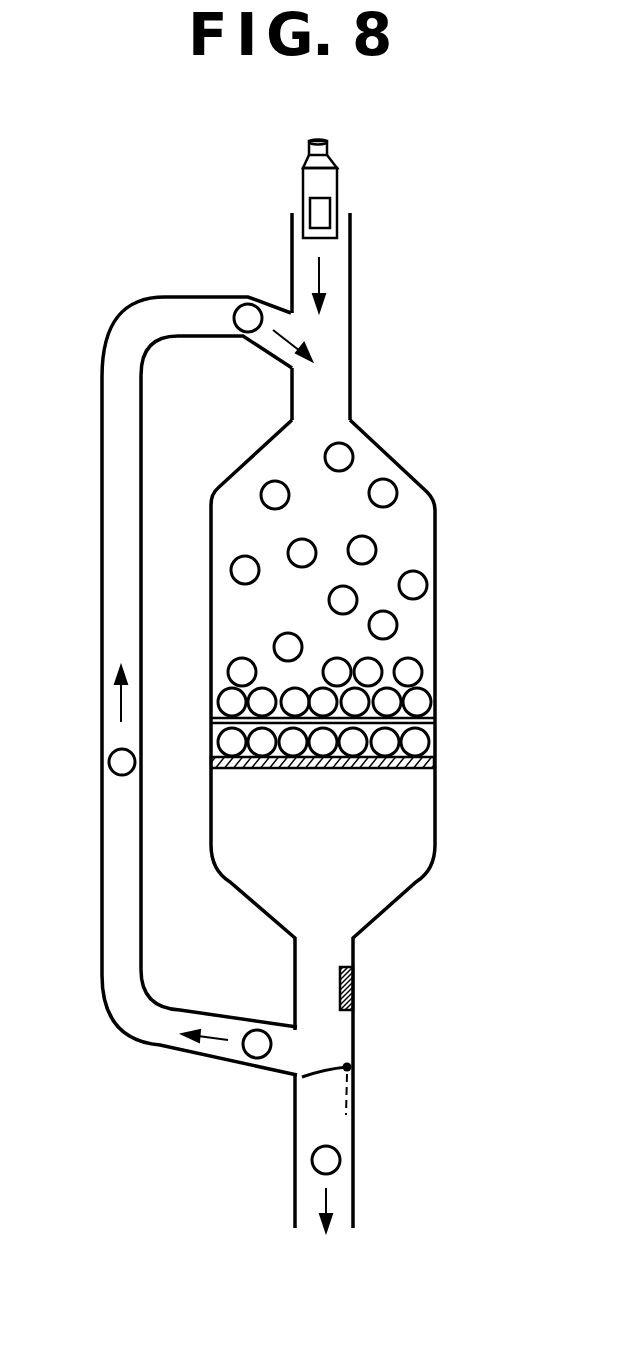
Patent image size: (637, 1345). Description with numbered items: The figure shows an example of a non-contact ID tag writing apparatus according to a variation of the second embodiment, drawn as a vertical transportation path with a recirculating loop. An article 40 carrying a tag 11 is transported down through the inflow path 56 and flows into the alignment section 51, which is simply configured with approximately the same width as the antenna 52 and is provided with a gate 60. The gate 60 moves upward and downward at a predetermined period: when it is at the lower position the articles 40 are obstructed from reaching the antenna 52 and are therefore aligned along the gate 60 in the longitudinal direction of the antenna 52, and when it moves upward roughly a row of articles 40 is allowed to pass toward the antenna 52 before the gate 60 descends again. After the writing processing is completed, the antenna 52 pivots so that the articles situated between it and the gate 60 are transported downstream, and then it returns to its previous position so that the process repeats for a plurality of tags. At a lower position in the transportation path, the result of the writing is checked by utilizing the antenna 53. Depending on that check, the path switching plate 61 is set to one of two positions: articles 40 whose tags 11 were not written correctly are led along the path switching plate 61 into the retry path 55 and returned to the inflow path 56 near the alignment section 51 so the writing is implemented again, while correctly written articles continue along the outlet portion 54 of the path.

The article 40 is at (323, 182).
The tag 11 is at (323, 207).
The inflow path 56 is at (332, 312).
The alignment section 51 is at (448, 577).
The gate 60 is at (434, 720).
The antenna 52 is at (434, 762).
The retry path 55 is at (120, 917).
The antenna 53 is at (355, 983).
The path switching plate 61 is at (352, 1065).
The outlet tube 54 is at (338, 1135).